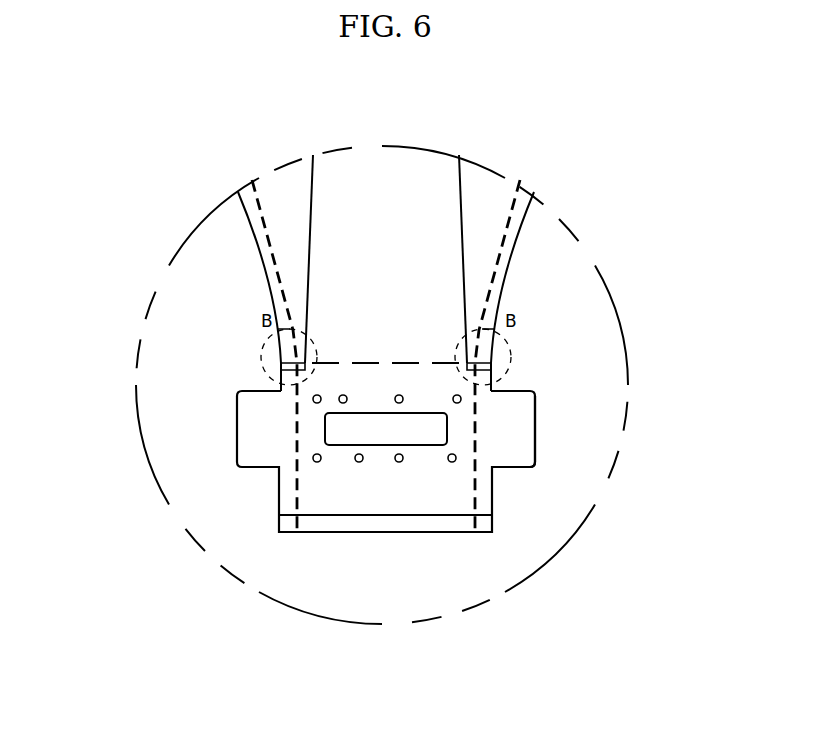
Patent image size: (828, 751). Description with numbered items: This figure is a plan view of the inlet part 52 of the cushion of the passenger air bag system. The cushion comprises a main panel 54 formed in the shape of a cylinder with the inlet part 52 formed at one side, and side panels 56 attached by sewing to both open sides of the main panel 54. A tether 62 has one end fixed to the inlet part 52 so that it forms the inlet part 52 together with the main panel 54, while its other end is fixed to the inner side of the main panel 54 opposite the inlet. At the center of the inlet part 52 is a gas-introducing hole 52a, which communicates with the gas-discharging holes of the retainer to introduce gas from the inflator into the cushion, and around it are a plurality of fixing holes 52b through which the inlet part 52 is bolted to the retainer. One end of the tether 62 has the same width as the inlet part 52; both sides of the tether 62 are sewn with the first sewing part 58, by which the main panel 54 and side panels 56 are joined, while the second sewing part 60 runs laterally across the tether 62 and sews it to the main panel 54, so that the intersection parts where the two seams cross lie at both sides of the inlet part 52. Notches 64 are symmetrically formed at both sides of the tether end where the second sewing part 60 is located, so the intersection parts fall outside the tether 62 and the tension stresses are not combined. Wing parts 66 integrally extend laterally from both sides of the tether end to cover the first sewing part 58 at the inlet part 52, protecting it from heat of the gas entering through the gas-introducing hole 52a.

The inlet part 52 is at (340, 500).
The gas-introducing hole 52a is at (387, 435).
The fixing holes 52b is at (455, 462).
The main panel 54 is at (478, 198).
The side panels 56 is at (571, 278).
The first sewing part 58 is at (252, 206).
The second sewing part 60 is at (333, 363).
The tether 62 is at (398, 162).
The notches 64 is at (487, 360).
The wing parts 66 is at (520, 438).